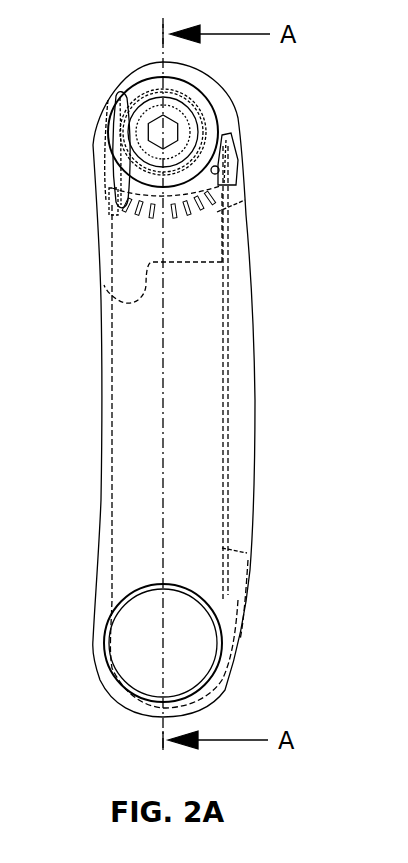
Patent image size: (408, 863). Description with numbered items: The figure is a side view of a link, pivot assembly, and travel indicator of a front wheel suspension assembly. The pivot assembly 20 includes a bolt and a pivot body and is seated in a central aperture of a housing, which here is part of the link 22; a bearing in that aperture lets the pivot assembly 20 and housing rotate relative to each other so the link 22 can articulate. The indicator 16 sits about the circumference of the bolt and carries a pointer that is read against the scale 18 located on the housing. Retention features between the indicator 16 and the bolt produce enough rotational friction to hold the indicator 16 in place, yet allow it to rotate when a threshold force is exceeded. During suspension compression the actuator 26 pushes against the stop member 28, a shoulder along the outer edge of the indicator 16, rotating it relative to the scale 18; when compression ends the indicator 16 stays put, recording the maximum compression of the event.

The indicator 16 is at (132, 82).
The scale 18 is at (115, 233).
The pivot assembly 20 is at (183, 120).
The link 22 is at (252, 378).
The actuator 26 is at (219, 171).
The stop member 28 is at (228, 138).